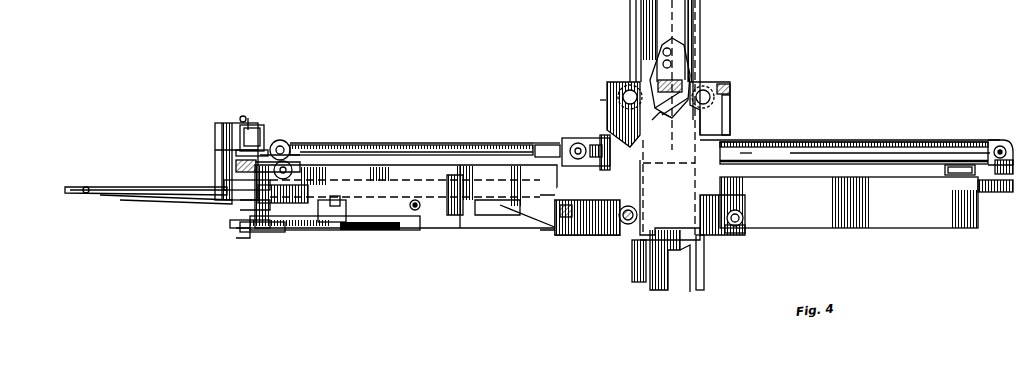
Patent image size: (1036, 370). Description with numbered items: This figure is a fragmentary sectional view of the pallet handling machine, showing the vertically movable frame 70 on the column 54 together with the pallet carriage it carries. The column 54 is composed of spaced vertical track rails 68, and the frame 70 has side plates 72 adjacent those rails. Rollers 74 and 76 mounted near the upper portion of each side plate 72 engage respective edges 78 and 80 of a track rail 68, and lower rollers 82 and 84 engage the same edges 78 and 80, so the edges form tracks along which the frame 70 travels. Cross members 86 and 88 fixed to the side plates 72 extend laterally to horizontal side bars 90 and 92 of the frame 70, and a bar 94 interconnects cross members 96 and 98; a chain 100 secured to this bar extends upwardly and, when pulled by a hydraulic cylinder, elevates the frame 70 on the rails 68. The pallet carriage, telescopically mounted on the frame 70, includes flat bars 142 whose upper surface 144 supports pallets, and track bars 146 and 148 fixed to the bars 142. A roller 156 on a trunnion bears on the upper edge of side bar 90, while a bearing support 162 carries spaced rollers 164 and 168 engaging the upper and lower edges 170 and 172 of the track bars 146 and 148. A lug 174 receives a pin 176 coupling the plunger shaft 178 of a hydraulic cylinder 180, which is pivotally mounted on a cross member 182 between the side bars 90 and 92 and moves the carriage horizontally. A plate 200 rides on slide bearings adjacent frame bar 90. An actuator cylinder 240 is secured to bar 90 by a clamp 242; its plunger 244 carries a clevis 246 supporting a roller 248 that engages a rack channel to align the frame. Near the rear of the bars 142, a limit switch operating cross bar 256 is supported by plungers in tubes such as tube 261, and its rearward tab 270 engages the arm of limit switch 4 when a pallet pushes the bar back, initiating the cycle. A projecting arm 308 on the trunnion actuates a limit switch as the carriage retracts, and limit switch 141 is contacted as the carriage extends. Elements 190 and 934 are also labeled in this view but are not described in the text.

The column 54 is at (684, 255).
The track rails 68 is at (647, 281).
The vertically movable frame 70 is at (720, 137).
The side plates 72 is at (724, 98).
The roller 74 is at (704, 85).
The roller 76 is at (630, 78).
The track rail edge 78 is at (695, 50).
The track rail edge 80 is at (636, 66).
The roller 82 is at (714, 234).
The roller 84 is at (622, 222).
The cross member 86 is at (738, 232).
The cross member 88 is at (561, 234).
The horizontal side bar 90 is at (904, 228).
The horizontal side bar 92 is at (515, 215).
The bar 94 is at (654, 118).
The cross member 96 is at (729, 86).
The cross member 98 is at (606, 104).
The chain 100 is at (686, 52).
The limit switch 141 is at (240, 206).
The flat bars 142 is at (68, 187).
The horizontal upper surface 144 is at (130, 158).
The track bar 146 is at (554, 153).
The track bar 148 is at (484, 143).
The roller 156 is at (288, 164).
The bearing support 162 is at (596, 135).
The roller 164 is at (568, 140).
The roller 168 is at (555, 228).
The upper edge 170 is at (524, 143).
The lower edge 172 is at (459, 215).
The lug 174 is at (288, 116).
The pin 176 is at (290, 148).
The plunger shaft 178 is at (410, 142).
The hydraulic cylinder 180 is at (904, 130).
The cross member 182 is at (954, 176).
The pivot 190 is at (451, 230).
The plate 200 is at (476, 166).
The actuator cylinder 240 is at (345, 222).
The clamp 242 is at (310, 232).
The plunger 244 is at (284, 234).
The clevis 246 is at (240, 240).
The roller 248 is at (236, 228).
The limit switch operating cross bar 256 is at (214, 130).
The tube 261 is at (214, 152).
The tab 270 is at (240, 118).
The projecting arm 308 is at (330, 160).
The rod 934 is at (178, 198).
The limit switch 4 is at (250, 128).